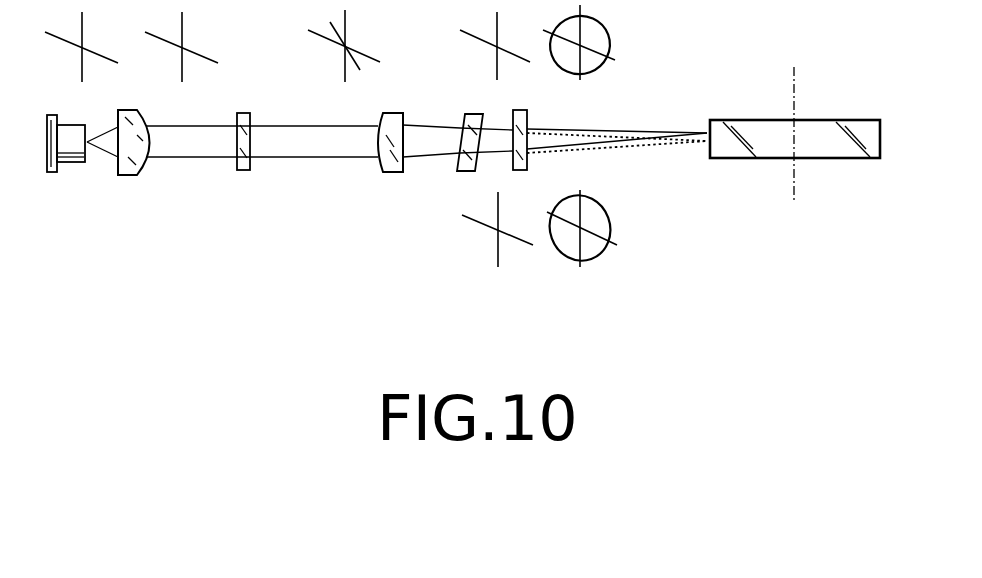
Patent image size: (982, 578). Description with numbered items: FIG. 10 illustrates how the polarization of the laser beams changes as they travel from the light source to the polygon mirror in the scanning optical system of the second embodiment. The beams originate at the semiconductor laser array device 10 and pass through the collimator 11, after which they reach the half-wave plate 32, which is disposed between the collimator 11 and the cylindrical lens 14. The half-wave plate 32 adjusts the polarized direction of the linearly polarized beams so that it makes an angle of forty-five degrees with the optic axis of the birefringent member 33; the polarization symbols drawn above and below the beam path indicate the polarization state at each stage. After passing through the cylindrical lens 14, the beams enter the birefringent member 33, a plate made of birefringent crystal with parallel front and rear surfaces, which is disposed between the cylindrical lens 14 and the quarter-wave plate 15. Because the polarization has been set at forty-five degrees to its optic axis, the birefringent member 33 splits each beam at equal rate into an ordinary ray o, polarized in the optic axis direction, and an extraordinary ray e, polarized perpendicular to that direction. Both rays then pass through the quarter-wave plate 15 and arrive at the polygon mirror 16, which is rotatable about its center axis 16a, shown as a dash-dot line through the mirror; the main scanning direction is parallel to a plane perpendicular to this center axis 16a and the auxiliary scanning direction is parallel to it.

The semiconductor laser array device 10 is at (70, 172).
The collimator 11 is at (127, 175).
The half-wave plate 32 is at (243, 172).
The cylindrical lens 14 is at (395, 173).
The birefringent member 33 is at (462, 113).
The quarter-wave plate 15 is at (527, 117).
The ordinary ray o is at (658, 128).
The extraordinary ray e is at (665, 142).
The polygon mirror 16 is at (833, 120).
The center axis 16a is at (794, 203).